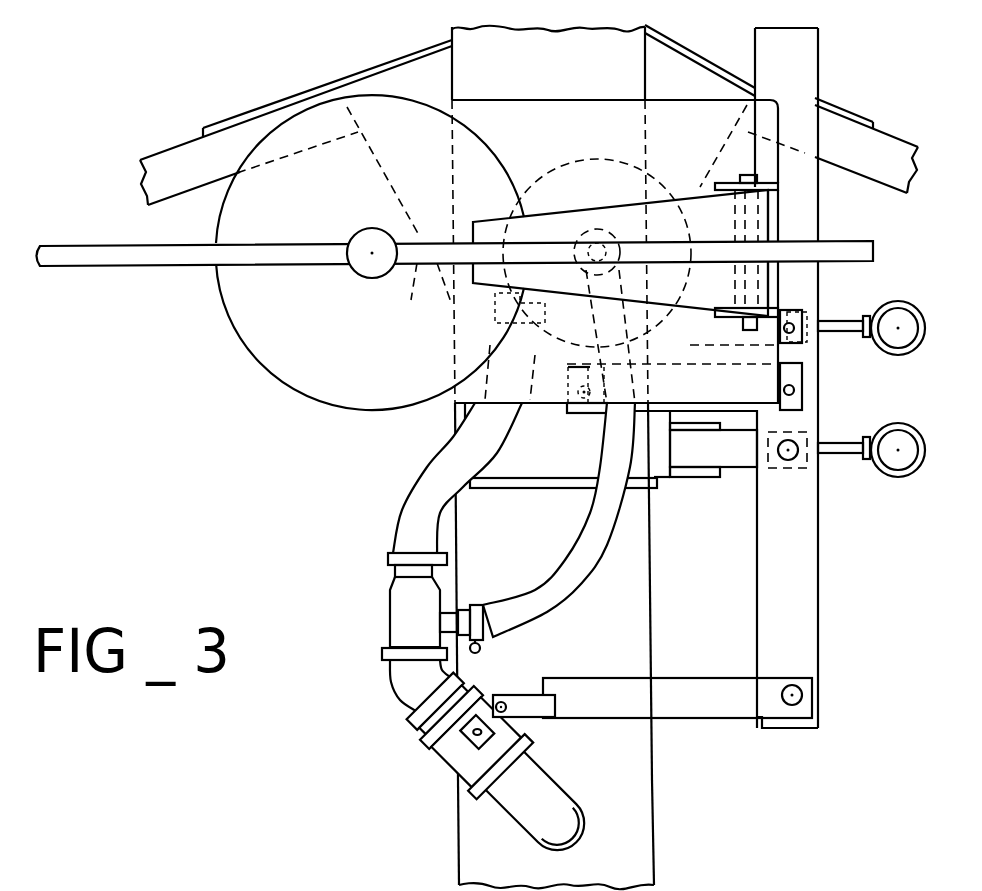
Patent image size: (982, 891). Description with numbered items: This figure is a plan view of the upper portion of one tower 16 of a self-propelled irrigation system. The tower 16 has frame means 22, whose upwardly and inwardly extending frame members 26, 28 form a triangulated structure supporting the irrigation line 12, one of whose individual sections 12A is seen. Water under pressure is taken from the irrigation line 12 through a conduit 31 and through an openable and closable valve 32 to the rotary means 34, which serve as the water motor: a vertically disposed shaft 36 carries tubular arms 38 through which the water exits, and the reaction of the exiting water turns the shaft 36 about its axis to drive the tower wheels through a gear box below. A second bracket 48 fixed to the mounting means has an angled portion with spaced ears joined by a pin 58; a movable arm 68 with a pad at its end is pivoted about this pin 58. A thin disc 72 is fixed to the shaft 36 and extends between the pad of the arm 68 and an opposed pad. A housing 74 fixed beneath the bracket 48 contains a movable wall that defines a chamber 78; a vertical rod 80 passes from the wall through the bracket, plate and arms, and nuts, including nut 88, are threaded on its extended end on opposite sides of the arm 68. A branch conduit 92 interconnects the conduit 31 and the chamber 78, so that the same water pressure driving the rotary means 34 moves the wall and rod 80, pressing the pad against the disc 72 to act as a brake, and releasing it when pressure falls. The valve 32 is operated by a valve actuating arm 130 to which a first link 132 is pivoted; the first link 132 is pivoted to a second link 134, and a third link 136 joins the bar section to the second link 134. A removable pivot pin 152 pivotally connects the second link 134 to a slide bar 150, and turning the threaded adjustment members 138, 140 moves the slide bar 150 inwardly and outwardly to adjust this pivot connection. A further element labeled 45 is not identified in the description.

The irrigation line 12 is at (675, 763).
The irrigation line section 12A is at (635, 827).
The tower 16 is at (892, 130).
The frame means 22 is at (140, 183).
The frame member 26 is at (212, 177).
The frame member 28 is at (882, 160).
The conduit 31 is at (503, 812).
The valve 32 is at (418, 737).
The rotary means 34 is at (200, 287).
The shaft 36 is at (363, 230).
The tubular arms 38 is at (110, 268).
The feed mechanism 45 is at (330, 493).
The second bracket 48 is at (530, 128).
The pin 58 is at (770, 278).
The arm 68 is at (518, 203).
The thin disc 72 is at (313, 368).
The housing 74 is at (655, 177).
The chamber 78 is at (344, 221).
The vertical rod 80 is at (620, 263).
The nut 88 is at (617, 243).
The branch conduit 92 is at (612, 540).
The valve actuating arm 130 is at (488, 700).
The first link 132 is at (697, 693).
The second link 134 is at (802, 577).
The third link 136 is at (800, 377).
The adjustment member 138 is at (898, 485).
The adjustment member 140 is at (897, 357).
The slide bar 150 is at (740, 457).
The removable pivot pin 152 is at (797, 457).